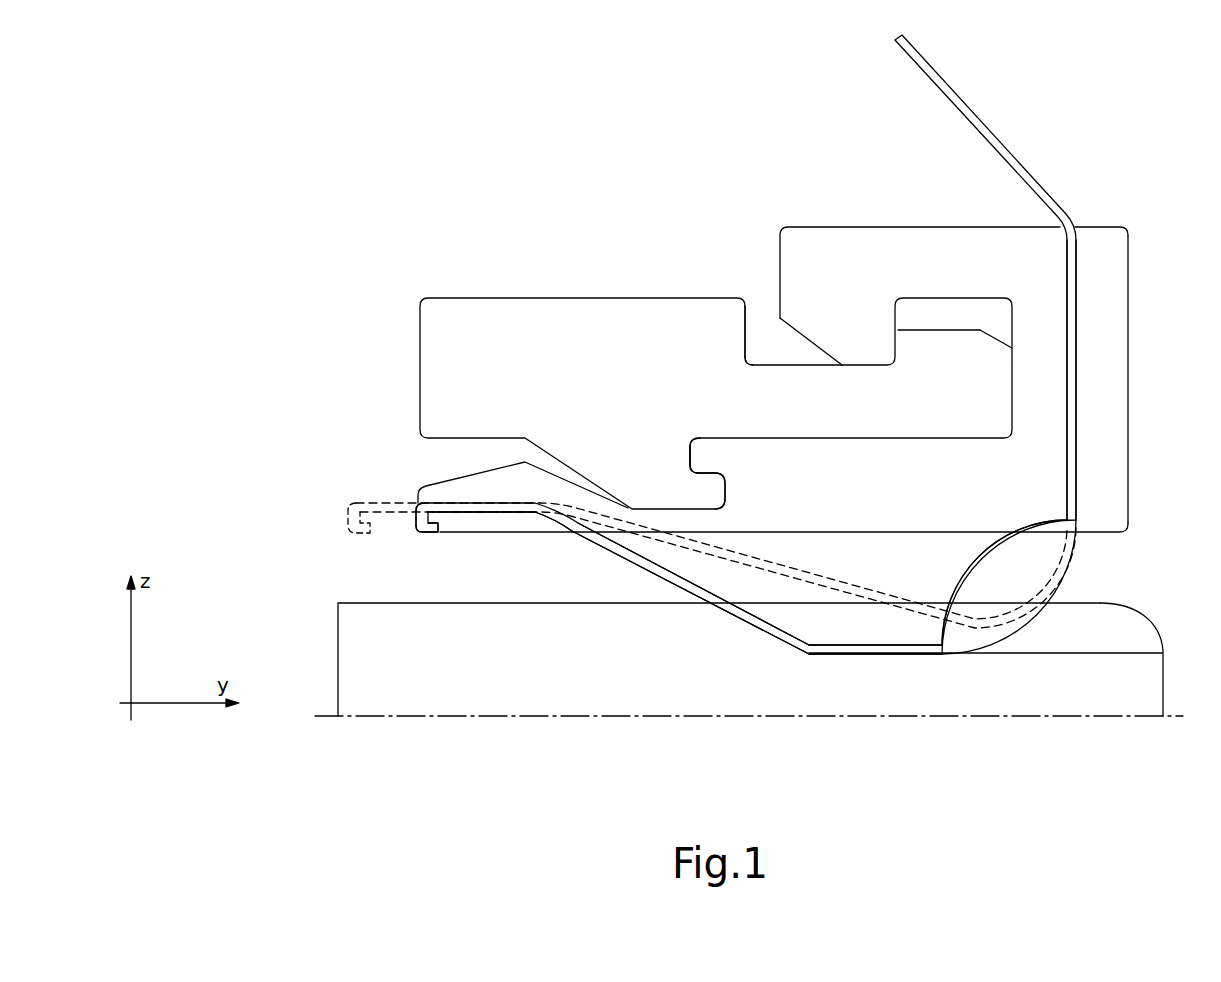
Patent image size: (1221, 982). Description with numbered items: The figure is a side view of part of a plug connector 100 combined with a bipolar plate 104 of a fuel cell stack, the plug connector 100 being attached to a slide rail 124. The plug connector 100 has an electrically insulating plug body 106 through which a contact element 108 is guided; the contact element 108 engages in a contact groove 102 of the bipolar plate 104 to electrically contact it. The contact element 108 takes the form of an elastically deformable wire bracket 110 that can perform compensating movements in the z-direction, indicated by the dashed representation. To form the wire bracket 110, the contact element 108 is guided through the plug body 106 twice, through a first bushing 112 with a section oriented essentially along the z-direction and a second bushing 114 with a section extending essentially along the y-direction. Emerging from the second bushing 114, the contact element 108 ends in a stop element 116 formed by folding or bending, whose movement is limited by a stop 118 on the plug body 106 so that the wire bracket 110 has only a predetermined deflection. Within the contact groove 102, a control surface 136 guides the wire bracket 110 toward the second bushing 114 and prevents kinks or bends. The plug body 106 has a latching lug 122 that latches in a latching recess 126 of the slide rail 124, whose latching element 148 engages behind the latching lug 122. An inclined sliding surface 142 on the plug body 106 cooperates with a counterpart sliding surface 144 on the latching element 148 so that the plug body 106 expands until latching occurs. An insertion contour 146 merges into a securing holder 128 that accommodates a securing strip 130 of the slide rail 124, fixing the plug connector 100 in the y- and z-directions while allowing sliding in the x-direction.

The plug connector 100 is at (1100, 263).
The contact groove 102 is at (1100, 622).
The bipolar plate 104 is at (343, 677).
The plug body 106 is at (1100, 362).
The contact element 108 is at (987, 137).
The wire bracket 110 is at (860, 620).
The first bushing 112 is at (1077, 442).
The second bushing 114 is at (513, 513).
The stop element 116 is at (350, 527).
The stop 118 is at (437, 530).
The latching lug 122 is at (852, 340).
The slide rail 124 is at (495, 318).
The latching recess 126 is at (745, 333).
The securing holder 128 is at (740, 477).
The securing strip 130 is at (682, 483).
The control surface 136 is at (785, 638).
The sliding surface 142 is at (802, 338).
The counterpart sliding surface 144 is at (993, 338).
The insertion contour 146 is at (493, 468).
The latching element 148 is at (932, 357).